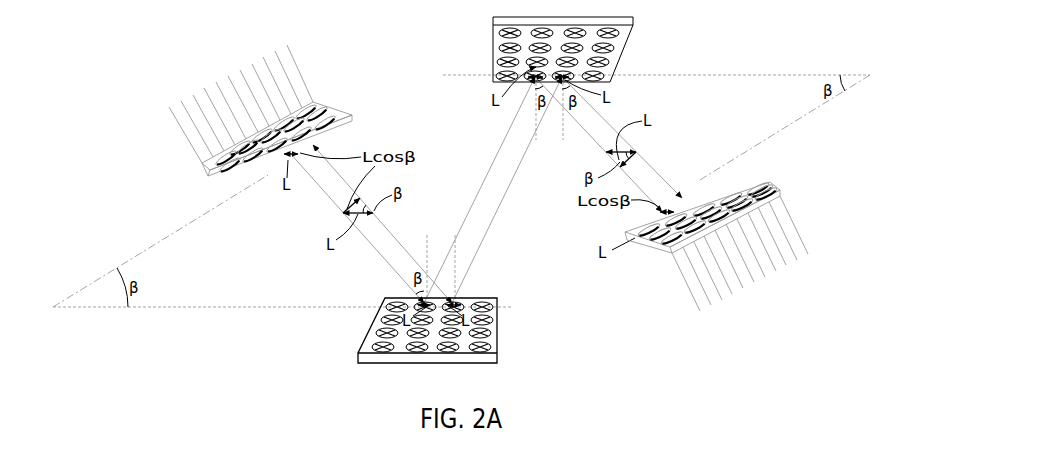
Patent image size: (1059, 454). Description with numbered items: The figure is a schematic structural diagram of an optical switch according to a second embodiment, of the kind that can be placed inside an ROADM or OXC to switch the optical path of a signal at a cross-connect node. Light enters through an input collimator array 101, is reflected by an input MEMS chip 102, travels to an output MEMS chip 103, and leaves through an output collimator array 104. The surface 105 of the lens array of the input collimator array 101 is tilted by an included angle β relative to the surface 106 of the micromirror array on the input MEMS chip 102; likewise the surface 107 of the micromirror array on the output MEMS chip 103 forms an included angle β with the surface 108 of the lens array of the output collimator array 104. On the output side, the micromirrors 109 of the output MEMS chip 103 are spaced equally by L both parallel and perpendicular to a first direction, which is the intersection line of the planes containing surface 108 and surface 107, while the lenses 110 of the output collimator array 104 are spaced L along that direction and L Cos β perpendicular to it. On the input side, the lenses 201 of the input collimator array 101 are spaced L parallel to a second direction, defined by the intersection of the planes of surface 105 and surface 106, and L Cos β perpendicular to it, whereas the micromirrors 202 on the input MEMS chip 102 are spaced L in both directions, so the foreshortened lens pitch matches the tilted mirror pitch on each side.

The input collimator array 101 is at (207, 170).
The surface of the lens array of the input collimator array 105 is at (227, 177).
The lenses of the lens array of the input collimator array 201 is at (352, 121).
The output MEMS chip 103 is at (505, 22).
The surface of the micromirror array on the output MEMS chip 107 is at (498, 40).
The micromirrors of the micromirror array on the output MEMS chip 109 is at (606, 63).
The input MEMS chip 102 is at (487, 358).
The surface of the micromirror array on the input MEMS chip 106 is at (490, 340).
The micromirrors of the micromirror array on the input MEMS chip 202 is at (390, 306).
The output collimator array 104 is at (637, 241).
The surface of the lens array of the output collimator array 108 is at (651, 237).
The lenses of the lens array of the output collimator array 110 is at (705, 185).